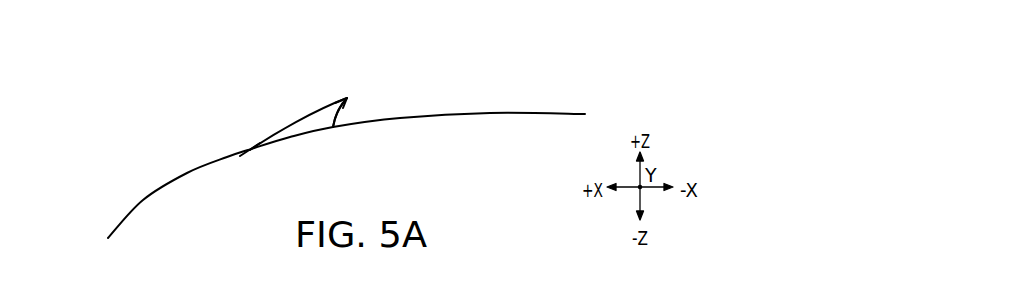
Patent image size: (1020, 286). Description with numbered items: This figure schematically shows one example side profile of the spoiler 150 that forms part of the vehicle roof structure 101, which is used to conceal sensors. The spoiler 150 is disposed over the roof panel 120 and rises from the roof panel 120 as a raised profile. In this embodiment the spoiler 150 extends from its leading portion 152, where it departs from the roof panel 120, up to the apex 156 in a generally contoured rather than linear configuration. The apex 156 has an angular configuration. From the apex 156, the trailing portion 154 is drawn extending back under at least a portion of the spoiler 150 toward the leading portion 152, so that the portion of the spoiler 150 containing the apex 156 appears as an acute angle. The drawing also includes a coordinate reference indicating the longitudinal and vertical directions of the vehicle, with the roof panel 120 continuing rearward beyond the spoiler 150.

The vehicle roof structure 101 is at (163, 155).
The roof panel 120 is at (492, 113).
The spoiler 150 is at (290, 107).
The leading portion 152 is at (250, 148).
The trailing portion 154 is at (338, 113).
The apex 156 is at (347, 98).